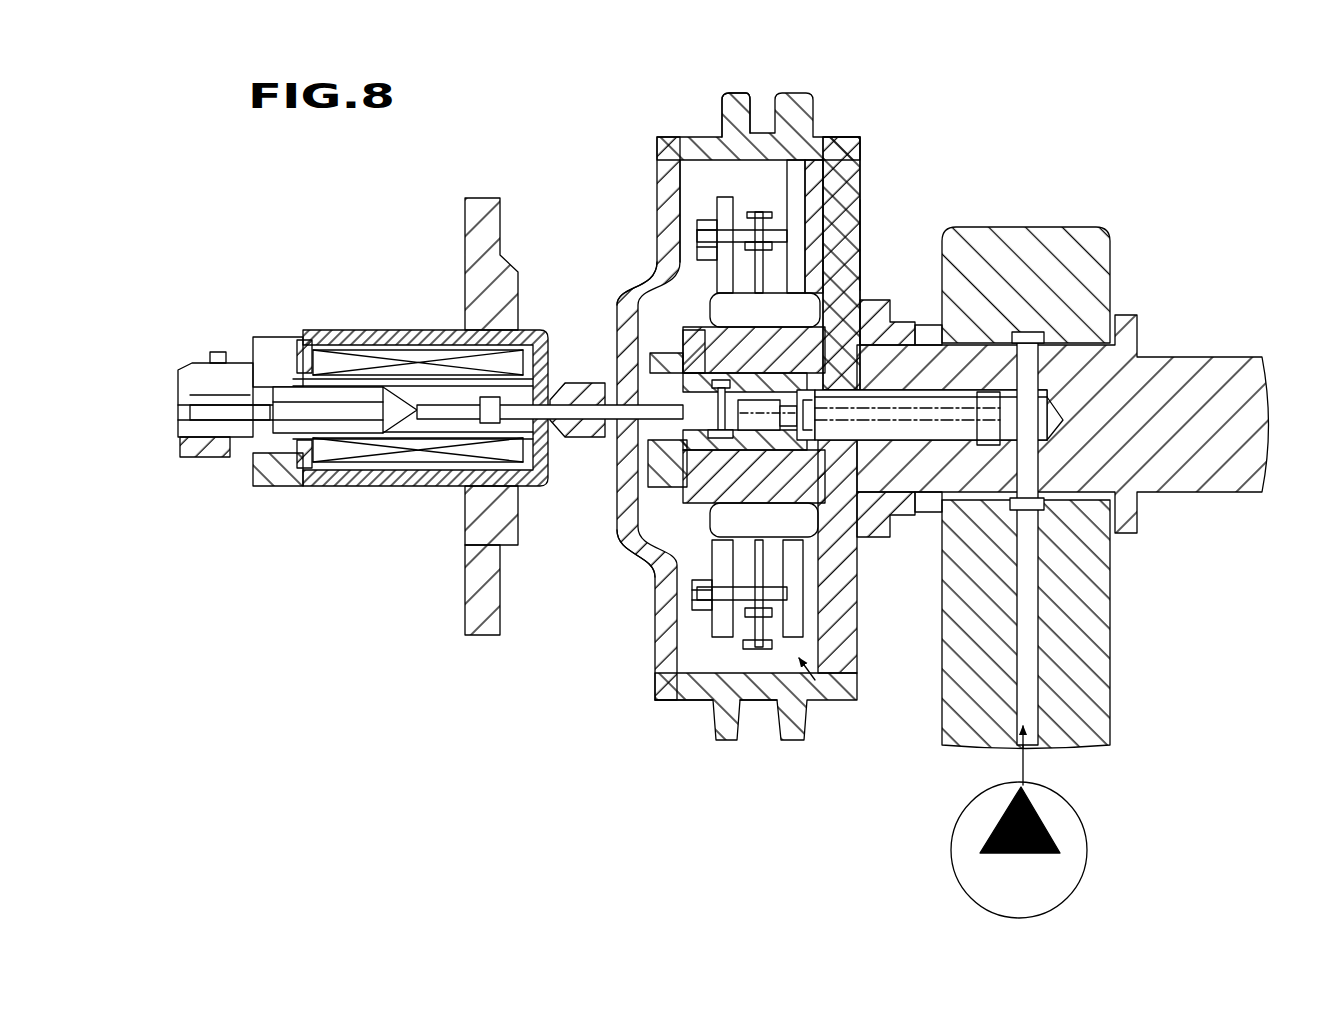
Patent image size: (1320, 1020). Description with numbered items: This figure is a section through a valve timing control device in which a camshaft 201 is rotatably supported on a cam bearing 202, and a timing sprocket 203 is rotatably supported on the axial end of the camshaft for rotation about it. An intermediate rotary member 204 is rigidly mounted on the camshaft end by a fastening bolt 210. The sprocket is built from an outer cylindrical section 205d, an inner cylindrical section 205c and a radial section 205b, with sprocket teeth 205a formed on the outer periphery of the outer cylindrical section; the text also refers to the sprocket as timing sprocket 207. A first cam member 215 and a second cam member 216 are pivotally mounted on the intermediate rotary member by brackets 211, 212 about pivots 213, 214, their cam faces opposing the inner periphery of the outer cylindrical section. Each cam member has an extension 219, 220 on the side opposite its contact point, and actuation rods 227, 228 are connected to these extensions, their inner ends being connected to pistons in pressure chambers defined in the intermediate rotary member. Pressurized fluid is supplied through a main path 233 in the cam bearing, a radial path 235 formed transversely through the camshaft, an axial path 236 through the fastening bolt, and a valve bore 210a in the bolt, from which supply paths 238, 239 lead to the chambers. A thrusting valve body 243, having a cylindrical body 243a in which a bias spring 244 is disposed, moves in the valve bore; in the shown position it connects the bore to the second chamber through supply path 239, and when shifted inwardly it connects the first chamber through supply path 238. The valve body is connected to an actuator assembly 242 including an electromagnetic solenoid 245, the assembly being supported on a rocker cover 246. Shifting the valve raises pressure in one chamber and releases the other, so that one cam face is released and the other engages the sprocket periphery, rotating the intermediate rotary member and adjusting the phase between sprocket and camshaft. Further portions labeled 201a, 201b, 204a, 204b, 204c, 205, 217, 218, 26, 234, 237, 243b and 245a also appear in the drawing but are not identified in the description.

The camshaft 201 is at (1228, 373).
The shaft collar portion 201a is at (905, 515).
The shaft collar portion 201b is at (912, 512).
The cam bearing 202 is at (1108, 271).
The timing sprocket 203 is at (868, 132).
The intermediate rotary member 204 is at (648, 570).
The housing portion 204a is at (620, 528).
The housing inner wall 204b is at (808, 236).
The housing inner wall 204c is at (835, 623).
The sleeve 205 is at (823, 133).
The sprocket teeth 205a is at (738, 100).
The radial section 205b is at (850, 252).
The inner cylindrical section 205c is at (843, 270).
The outer cylindrical section 205d is at (697, 703).
The timing sprocket 207 is at (765, 675).
The fastening bolt 210 is at (622, 312).
The valve bore 210a is at (630, 477).
The bracket 211 is at (715, 208).
The bracket 212 is at (856, 700).
The pivot 213 is at (770, 215).
The pivot 214 is at (735, 598).
The first cam member 215 is at (740, 183).
The second cam member 216 is at (760, 620).
The plate 217 is at (795, 190).
The bolt 218 is at (810, 673).
The extension 219 is at (790, 186).
The extension 220 is at (655, 700).
The actuation rod 227 is at (758, 252).
The actuation rod 228 is at (793, 627).
The nut 26 is at (683, 673).
The main path 233 is at (1042, 597).
The fuel pump 234 is at (1088, 826).
The radial path 235 is at (1035, 565).
The axial path 236 is at (955, 412).
The piston 237 is at (878, 470).
The supply path 238 is at (740, 450).
The supply path 239 is at (800, 450).
The actuator assembly 242 is at (550, 490).
The thrusting valve body 243 is at (690, 345).
The cylindrical body 243a is at (775, 347).
The lever arm 243b is at (705, 432).
The bias spring 244 is at (897, 318).
The electromagnetic solenoid 245 is at (372, 335).
The plunger rod 245a is at (590, 400).
The rocker cover 246 is at (470, 240).